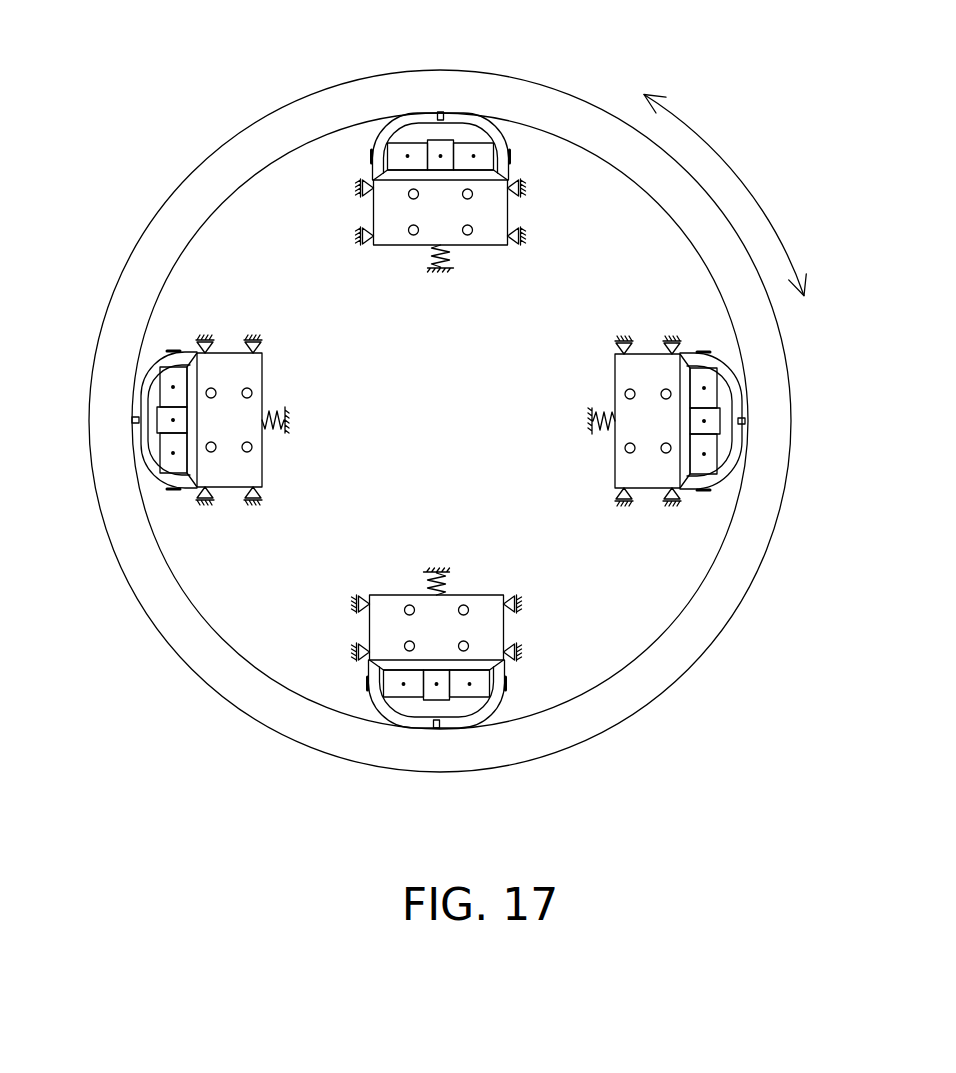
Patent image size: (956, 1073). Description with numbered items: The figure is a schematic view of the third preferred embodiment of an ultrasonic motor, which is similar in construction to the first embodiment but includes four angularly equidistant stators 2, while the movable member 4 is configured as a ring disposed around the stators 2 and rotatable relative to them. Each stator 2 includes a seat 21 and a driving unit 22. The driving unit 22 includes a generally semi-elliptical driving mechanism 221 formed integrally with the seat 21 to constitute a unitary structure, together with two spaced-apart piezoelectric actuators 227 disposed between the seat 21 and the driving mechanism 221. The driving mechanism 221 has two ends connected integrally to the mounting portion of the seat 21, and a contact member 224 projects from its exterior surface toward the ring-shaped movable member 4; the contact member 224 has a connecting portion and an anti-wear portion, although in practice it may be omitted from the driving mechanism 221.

The movable member 4 is at (214, 151).
The stator 2 is at (266, 248).
The seat 21 is at (368, 224).
The driving unit 22 is at (366, 171).
The driving mechanism 221 is at (512, 132).
The contact member 224 is at (442, 108).
The piezoelectric actuator 227 is at (408, 142).